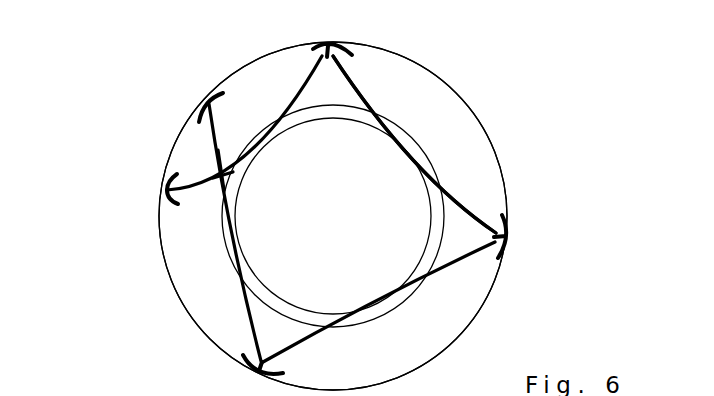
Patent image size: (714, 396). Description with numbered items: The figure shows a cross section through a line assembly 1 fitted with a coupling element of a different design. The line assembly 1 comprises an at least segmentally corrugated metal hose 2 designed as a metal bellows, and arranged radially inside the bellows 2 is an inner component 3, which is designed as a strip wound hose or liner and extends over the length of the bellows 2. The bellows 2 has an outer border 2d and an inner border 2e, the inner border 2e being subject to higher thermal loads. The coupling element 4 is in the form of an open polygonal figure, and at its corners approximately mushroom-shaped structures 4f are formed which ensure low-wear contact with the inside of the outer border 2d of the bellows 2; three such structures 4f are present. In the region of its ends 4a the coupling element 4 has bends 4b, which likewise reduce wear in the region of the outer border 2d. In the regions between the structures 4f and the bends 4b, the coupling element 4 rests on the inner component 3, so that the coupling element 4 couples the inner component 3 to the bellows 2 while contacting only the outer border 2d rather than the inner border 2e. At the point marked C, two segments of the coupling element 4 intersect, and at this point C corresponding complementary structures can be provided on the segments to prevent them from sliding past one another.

The line assembly 1 is at (143, 331).
The metal hose 2 is at (353, 199).
The outer border 2d is at (430, 70).
The inner border 2e is at (397, 312).
The inner component 3 is at (263, 307).
The coupling element 4 is at (491, 193).
The ends 4a is at (129, 188).
The bends 4b is at (165, 197).
The mushroom-shaped structures 4f is at (525, 235).
The intersection point C is at (206, 168).